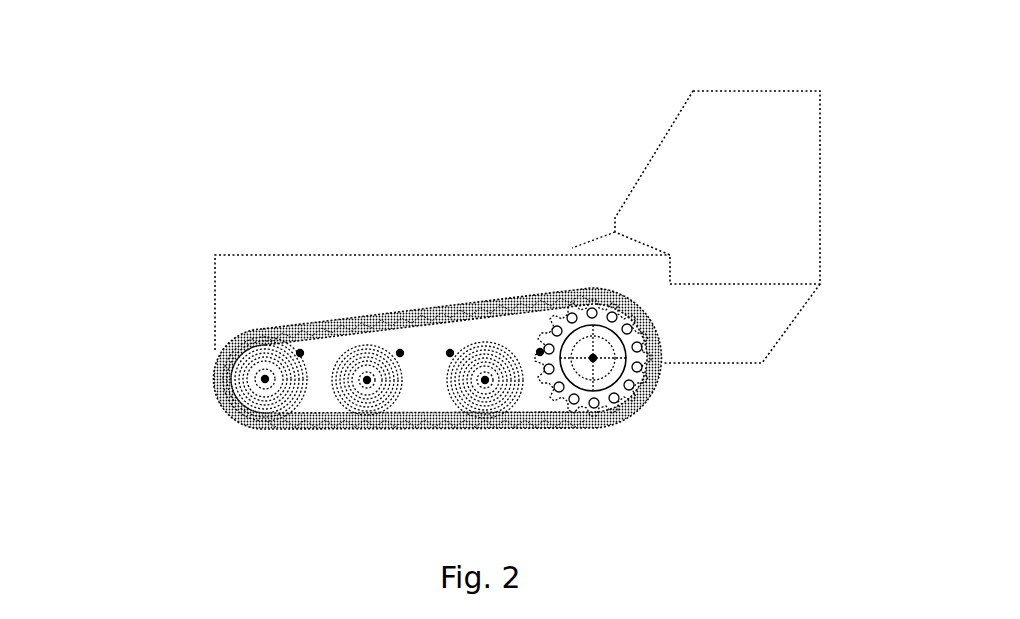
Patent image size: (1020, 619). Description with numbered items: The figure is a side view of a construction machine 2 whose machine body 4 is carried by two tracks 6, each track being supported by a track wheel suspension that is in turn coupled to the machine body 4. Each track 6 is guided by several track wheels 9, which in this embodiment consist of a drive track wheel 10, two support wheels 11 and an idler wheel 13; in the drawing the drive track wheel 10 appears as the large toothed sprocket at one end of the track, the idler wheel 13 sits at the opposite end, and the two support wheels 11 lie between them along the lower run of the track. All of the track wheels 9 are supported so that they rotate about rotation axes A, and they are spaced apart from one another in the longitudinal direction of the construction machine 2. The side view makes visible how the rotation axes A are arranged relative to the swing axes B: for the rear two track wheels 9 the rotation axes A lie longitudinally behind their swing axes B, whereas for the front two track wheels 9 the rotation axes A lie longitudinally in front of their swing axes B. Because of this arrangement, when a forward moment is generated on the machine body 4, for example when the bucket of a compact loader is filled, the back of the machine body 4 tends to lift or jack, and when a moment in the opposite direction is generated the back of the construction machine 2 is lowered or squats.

The construction machine 2 is at (543, 153).
The machine body 4 is at (278, 275).
The tracks 6 is at (228, 330).
The track wheels 9 is at (248, 413).
The drive track wheel 10 is at (638, 379).
The support wheels 11 is at (342, 388).
The idler wheel 13 is at (243, 375).
The rotation axes A is at (265, 379).
The swing axes B is at (300, 353).